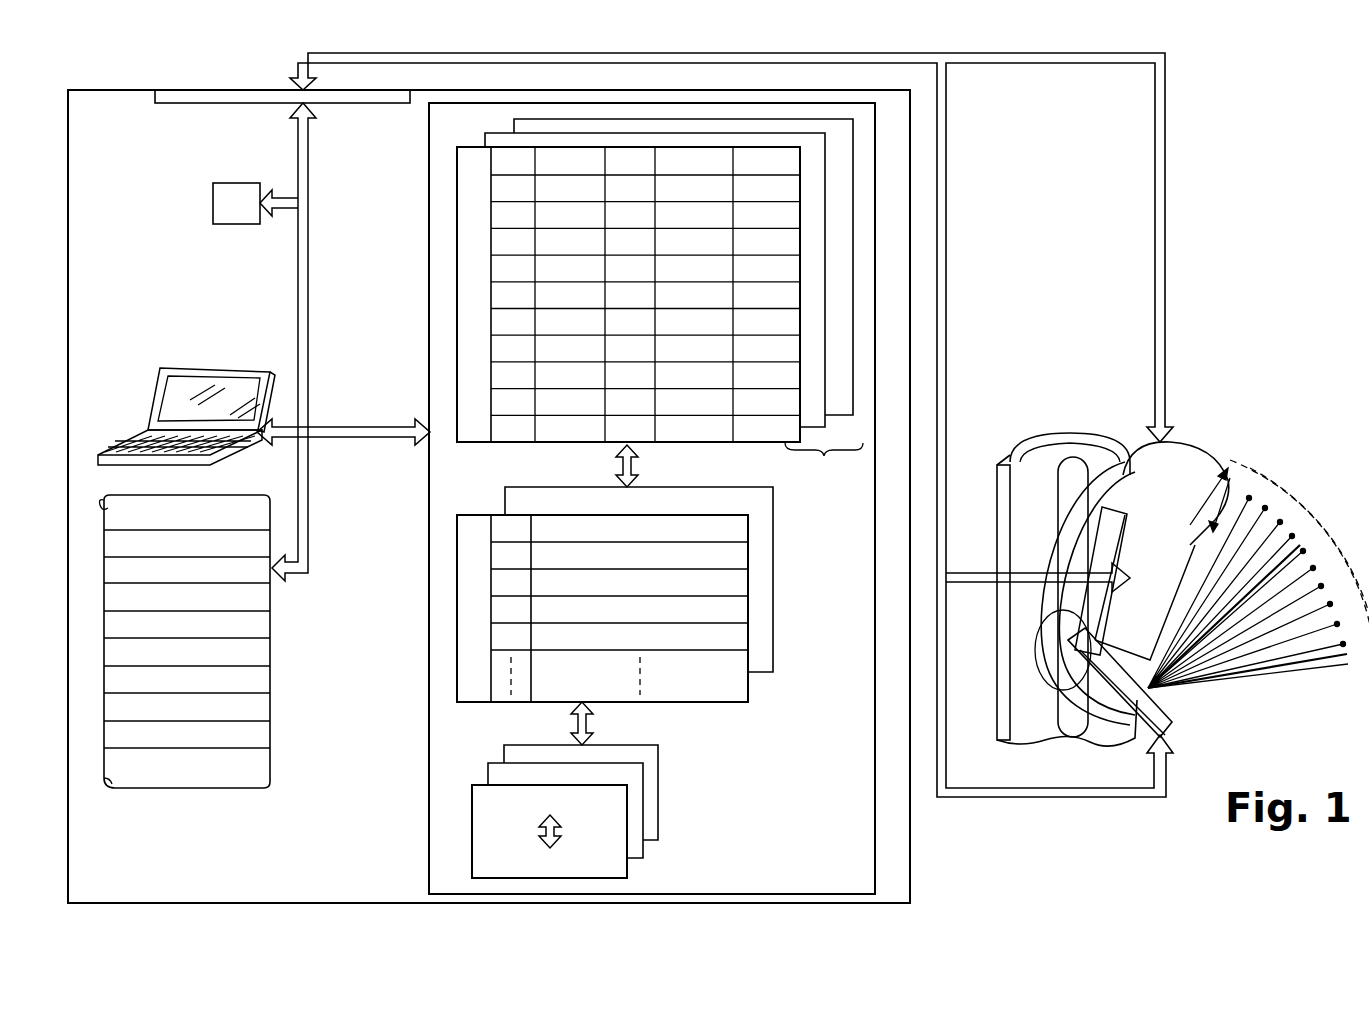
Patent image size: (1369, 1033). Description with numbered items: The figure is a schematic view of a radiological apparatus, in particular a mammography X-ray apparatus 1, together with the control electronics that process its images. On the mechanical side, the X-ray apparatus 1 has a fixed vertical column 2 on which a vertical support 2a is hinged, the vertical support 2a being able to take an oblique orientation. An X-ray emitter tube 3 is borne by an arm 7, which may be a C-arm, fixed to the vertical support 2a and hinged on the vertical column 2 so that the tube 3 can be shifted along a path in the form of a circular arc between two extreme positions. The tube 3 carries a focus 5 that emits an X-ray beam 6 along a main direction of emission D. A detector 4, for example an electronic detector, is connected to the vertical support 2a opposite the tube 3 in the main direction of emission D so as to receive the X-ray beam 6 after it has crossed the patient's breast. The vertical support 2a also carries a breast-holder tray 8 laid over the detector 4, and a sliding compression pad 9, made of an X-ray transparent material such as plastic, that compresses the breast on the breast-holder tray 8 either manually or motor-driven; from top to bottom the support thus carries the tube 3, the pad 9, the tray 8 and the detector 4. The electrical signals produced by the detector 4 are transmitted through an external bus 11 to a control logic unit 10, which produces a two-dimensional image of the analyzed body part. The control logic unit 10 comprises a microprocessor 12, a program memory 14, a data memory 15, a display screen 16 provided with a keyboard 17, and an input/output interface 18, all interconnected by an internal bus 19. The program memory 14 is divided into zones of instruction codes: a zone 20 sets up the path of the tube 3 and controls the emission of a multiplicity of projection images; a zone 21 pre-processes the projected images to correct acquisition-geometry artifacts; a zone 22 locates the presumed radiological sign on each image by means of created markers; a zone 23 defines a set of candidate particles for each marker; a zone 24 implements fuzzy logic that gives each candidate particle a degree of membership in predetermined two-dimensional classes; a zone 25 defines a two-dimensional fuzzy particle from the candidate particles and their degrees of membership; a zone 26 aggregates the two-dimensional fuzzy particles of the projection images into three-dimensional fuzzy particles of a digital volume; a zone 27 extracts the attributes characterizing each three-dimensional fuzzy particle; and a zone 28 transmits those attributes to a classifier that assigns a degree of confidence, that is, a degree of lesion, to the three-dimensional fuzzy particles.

The X-ray apparatus 1 is at (718, 478).
The vertical column 2 is at (1035, 455).
The vertical support 2a is at (1090, 602).
The X-ray emitter tube 3 is at (1185, 460).
The detector 4 is at (1172, 735).
The focus 5 is at (1222, 468).
The X-ray beam 6 is at (1242, 465).
The arm 7 is at (1060, 540).
The breast-holder tray 8 is at (1172, 703).
The compression pad 9 is at (1055, 642).
The control logic unit 10 is at (900, 873).
The external bus 11 is at (1165, 148).
The microprocessor 12 is at (247, 185).
The program memory 14 is at (227, 663).
The data memory 15 is at (875, 820).
The display screen 16 is at (170, 387).
The keyboard 17 is at (135, 440).
The input/output interface 18 is at (172, 95).
The internal bus 19 is at (305, 358).
The zone 20 is at (210, 500).
The zone 21 is at (240, 542).
The zone 22 is at (255, 566).
The zone 23 is at (265, 592).
The zone 24 is at (265, 620).
The zone 25 is at (265, 650).
The zone 26 is at (262, 677).
The zone 27 is at (265, 708).
The zone 28 is at (260, 740).
The main direction of emission D is at (1190, 545).